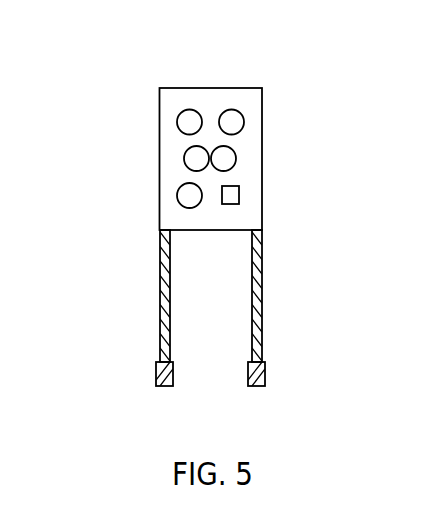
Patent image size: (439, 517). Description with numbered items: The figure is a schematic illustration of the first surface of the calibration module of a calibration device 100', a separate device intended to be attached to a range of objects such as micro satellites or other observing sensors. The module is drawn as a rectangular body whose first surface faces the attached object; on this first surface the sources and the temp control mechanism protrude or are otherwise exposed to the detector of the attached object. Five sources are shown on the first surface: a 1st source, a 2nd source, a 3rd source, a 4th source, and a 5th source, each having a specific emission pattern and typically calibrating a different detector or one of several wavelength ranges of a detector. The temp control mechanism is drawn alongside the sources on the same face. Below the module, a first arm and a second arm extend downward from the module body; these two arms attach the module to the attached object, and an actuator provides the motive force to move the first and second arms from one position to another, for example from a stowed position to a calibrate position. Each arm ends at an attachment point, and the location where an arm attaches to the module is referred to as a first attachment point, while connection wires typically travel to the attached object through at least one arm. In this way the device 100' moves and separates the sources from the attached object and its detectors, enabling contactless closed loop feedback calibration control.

The calibration device 100' is at (230, 224).
The element first surface is at (248, 98).
The first source 1st source is at (176, 122).
The second source 2nd source is at (244, 122).
The third source 3rd source is at (183, 158).
The fourth source 4th source is at (236, 158).
The fifth source 5th source is at (177, 196).
The element second arm is at (159, 294).
The element first arm is at (262, 302).